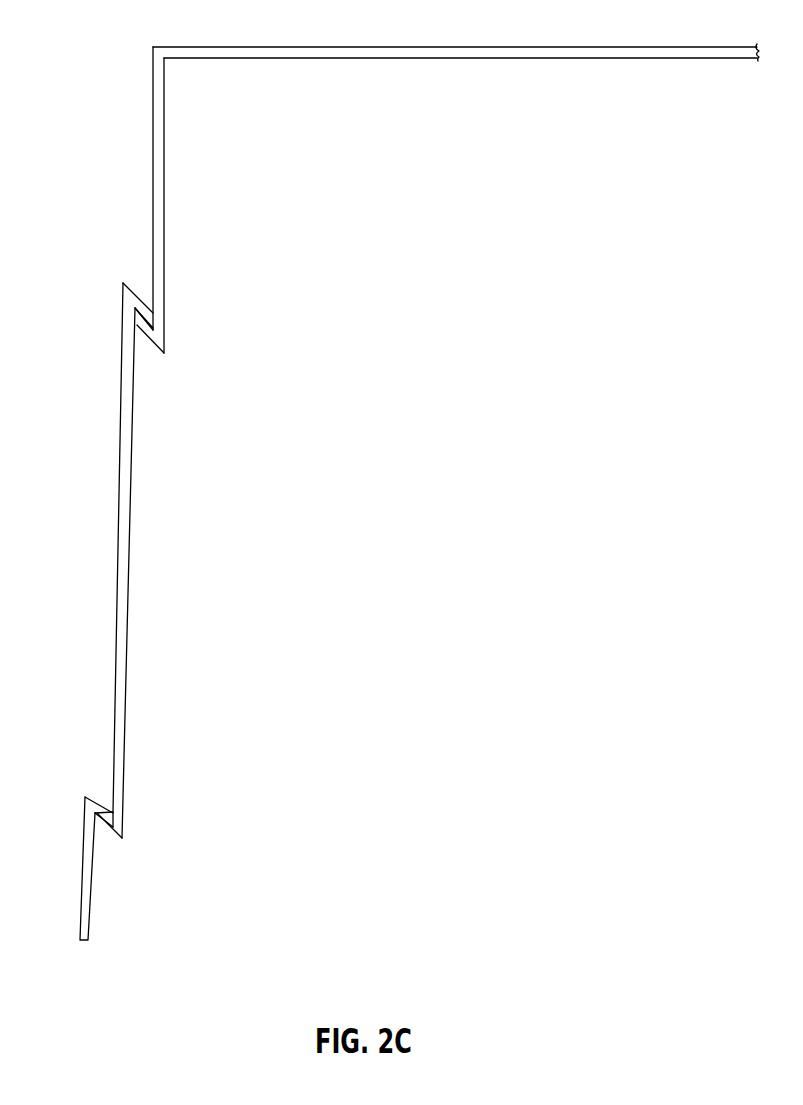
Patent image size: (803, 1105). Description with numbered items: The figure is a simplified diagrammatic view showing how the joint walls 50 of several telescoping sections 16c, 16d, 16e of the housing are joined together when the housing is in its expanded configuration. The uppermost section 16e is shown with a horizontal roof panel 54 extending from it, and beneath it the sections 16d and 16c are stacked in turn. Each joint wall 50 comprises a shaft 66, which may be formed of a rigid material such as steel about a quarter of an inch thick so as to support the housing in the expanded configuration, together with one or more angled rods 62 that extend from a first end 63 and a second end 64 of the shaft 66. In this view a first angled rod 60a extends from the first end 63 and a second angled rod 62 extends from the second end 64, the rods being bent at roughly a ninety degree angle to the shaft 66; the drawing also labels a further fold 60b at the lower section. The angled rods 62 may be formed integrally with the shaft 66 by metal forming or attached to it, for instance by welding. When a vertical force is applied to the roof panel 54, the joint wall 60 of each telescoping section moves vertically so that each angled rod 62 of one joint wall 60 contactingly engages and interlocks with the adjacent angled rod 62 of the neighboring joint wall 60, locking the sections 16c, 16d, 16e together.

The roof panel 54 is at (540, 47).
The telescoping section 16e is at (153, 124).
The telescoping section 16d is at (131, 503).
The telescoping section 16c is at (93, 917).
The joint wall 50 is at (164, 160).
The joint wall 60 is at (156, 352).
The first angled rod 60a is at (136, 292).
The fold of panel 16c 60b is at (108, 837).
The angled rod 62 is at (122, 305).
The first end 63 is at (123, 280).
The second end 64 is at (138, 827).
The shaft 66 is at (118, 560).